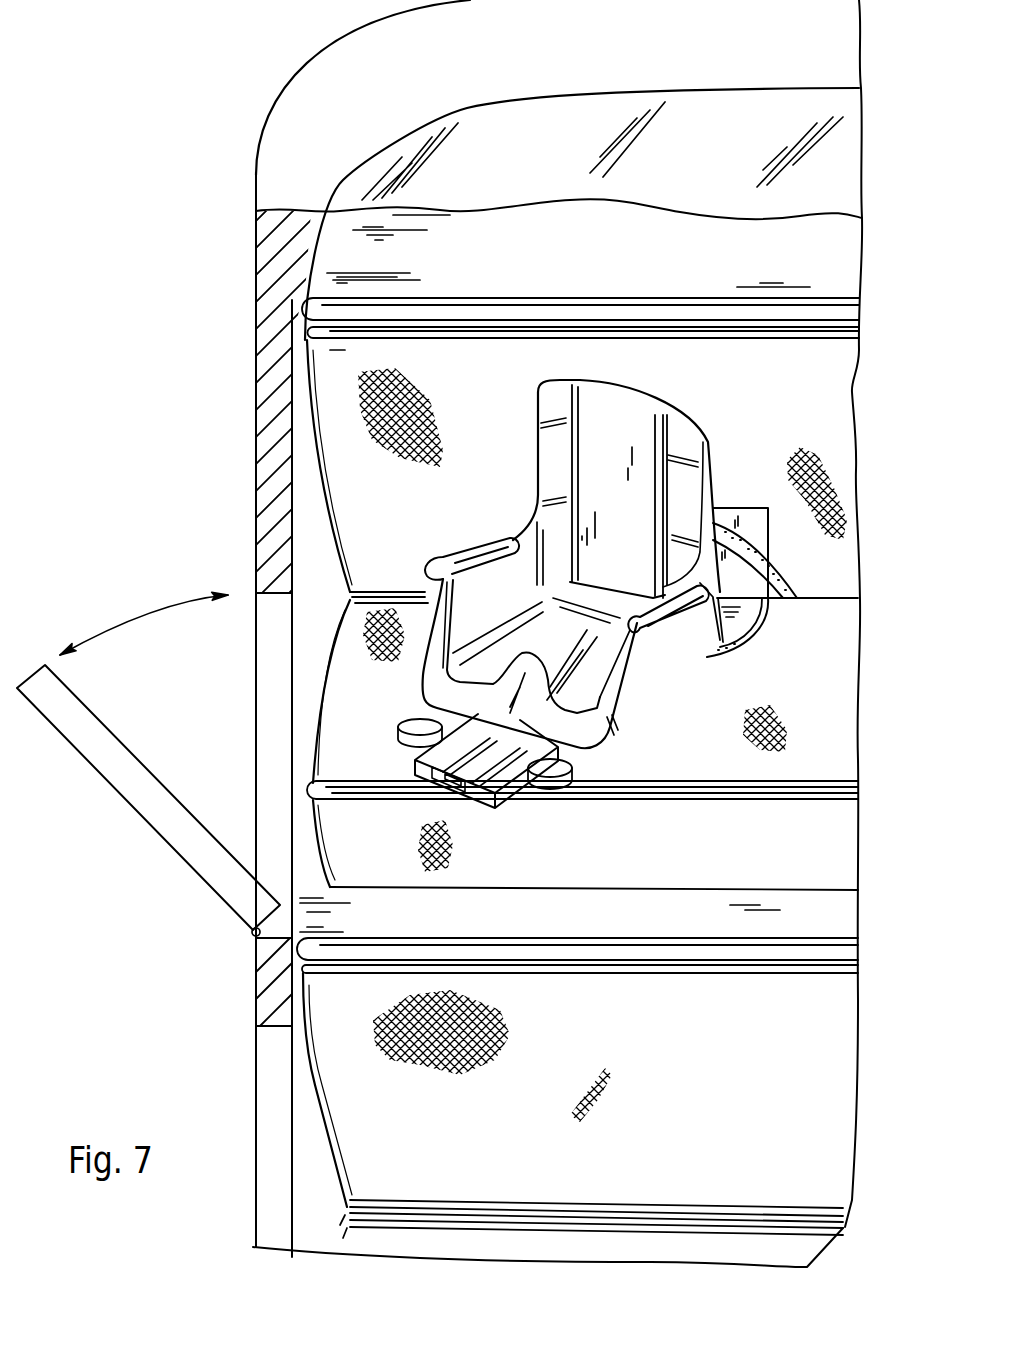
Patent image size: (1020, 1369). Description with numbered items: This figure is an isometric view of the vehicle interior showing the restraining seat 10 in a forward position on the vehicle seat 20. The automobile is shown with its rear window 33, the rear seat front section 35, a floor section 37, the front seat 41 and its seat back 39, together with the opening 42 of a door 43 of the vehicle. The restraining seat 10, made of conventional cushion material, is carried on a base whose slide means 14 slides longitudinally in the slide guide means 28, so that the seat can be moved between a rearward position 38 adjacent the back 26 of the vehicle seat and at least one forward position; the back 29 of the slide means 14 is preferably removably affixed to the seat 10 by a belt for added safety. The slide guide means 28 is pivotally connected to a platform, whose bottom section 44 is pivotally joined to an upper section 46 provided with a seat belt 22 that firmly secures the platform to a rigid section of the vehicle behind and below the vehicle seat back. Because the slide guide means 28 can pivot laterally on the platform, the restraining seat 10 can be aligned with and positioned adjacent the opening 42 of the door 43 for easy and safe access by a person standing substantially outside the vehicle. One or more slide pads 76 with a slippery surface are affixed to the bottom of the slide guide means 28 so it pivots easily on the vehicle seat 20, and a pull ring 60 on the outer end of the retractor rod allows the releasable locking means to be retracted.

The restraining seat 10 is at (571, 564).
The slide means 14 is at (484, 780).
The vehicle seat 20 is at (803, 726).
The seat belt 22 is at (782, 573).
The back 26 is at (735, 389).
The slide guide means 28 is at (707, 657).
The back 29 is at (720, 617).
The rear window 33 is at (663, 178).
The rear seat front section 35 is at (598, 866).
The floor section 37 is at (598, 929).
The rearward position 38 is at (510, 488).
The seat back 39 is at (598, 1034).
The front seat 41 is at (571, 1261).
The opening 42 is at (240, 704).
The door 43 is at (173, 852).
The bottom section 44 is at (740, 643).
The upper section 46 is at (772, 520).
The pull ring 60 is at (447, 789).
The slide pad 76 is at (573, 790).